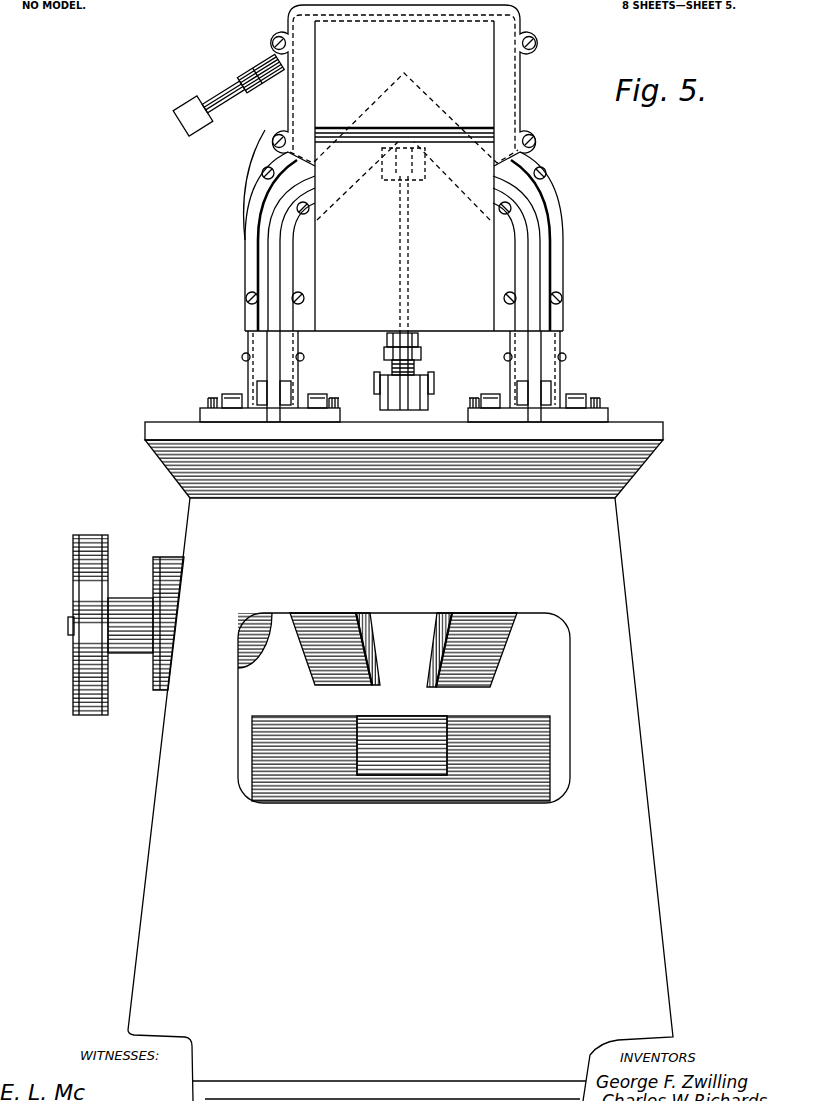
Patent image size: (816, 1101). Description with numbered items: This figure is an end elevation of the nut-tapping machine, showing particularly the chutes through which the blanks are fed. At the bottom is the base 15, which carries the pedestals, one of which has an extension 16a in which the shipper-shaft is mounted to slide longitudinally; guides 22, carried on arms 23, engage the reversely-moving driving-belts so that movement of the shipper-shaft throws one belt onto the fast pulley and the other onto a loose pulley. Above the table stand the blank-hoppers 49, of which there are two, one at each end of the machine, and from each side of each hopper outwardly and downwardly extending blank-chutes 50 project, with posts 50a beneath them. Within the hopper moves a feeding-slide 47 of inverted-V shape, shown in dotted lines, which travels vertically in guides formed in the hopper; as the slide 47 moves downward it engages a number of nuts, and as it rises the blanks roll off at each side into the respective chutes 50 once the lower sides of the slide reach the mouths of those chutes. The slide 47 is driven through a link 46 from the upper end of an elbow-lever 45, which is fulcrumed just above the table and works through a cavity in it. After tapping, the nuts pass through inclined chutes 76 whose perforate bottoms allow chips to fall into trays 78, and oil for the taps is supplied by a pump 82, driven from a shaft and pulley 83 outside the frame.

The base 15 is at (400, 761).
The extension of pedestal 16a is at (266, 133).
The guides 22 is at (195, 119).
The arms 23 is at (260, 88).
The elbow-levers 45 is at (412, 376).
The links 46 is at (403, 301).
The feeding-slides 47 is at (425, 109).
The blank-hoppers 49 is at (404, 168).
The blank-chutes 50 is at (272, 241).
The posts 50a is at (568, 349).
The inclined chutes 76 is at (431, 664).
The trays 78 is at (391, 724).
The pump 82 is at (247, 655).
The pulley 83 is at (106, 556).